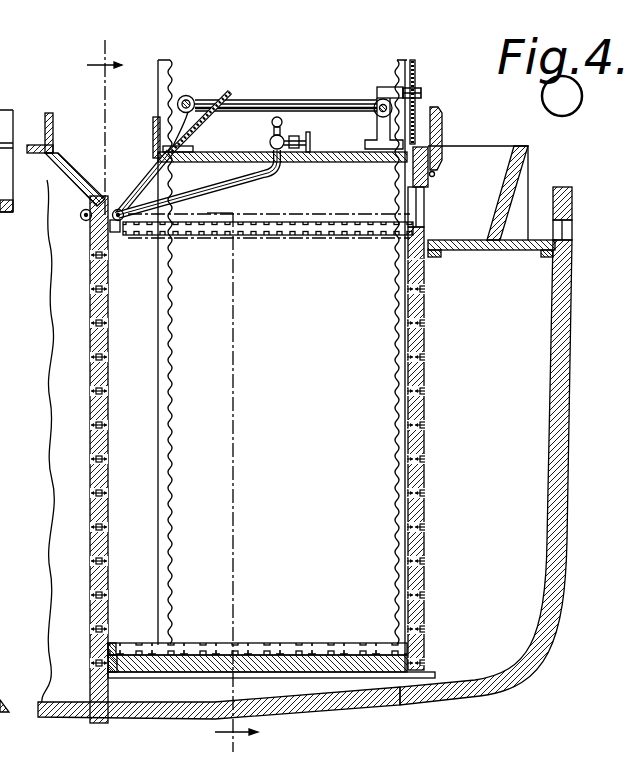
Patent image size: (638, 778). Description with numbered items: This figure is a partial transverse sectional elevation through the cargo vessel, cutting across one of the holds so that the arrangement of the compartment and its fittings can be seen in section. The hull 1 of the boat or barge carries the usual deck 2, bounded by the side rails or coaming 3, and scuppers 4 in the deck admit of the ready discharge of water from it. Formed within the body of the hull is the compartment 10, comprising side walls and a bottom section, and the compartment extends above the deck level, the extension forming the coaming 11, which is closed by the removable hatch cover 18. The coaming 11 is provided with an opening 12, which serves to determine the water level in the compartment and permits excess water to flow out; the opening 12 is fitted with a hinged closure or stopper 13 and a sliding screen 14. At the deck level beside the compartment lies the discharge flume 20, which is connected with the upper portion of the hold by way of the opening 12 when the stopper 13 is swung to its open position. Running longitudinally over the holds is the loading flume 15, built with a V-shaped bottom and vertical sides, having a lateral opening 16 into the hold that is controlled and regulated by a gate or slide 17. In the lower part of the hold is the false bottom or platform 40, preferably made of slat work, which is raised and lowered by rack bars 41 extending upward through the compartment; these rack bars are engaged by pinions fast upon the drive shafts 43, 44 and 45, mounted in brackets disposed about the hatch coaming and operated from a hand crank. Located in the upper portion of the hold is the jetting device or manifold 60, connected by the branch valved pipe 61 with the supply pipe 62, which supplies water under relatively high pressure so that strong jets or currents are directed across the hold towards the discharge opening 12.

The hull 1 is at (567, 402).
The deck 2 is at (516, 251).
The side rails or coaming 3 is at (573, 198).
The scuppers 4 is at (570, 234).
The compartment 10 is at (281, 366).
The coaming 11 is at (432, 182).
The opening 12 is at (425, 221).
The hinged closure or stopper 13 is at (443, 136).
The sliding screen 14 is at (416, 108).
The flume 15 is at (53, 139).
The lateral openings 16 is at (136, 186).
The gate or slide 17 is at (196, 120).
The hatch cover 18 is at (360, 163).
The discharge flume 20 is at (501, 190).
The false bottom or platform 40 is at (296, 238).
The rack bars 41 is at (172, 548).
The drive shaft 43 is at (378, 113).
The drive shaft 44 is at (332, 100).
The drive shaft 45 is at (189, 96).
The jetting device or manifold 60 is at (84, 222).
The branch valved pipe 61 is at (255, 186).
The supply pipe 62 is at (279, 116).